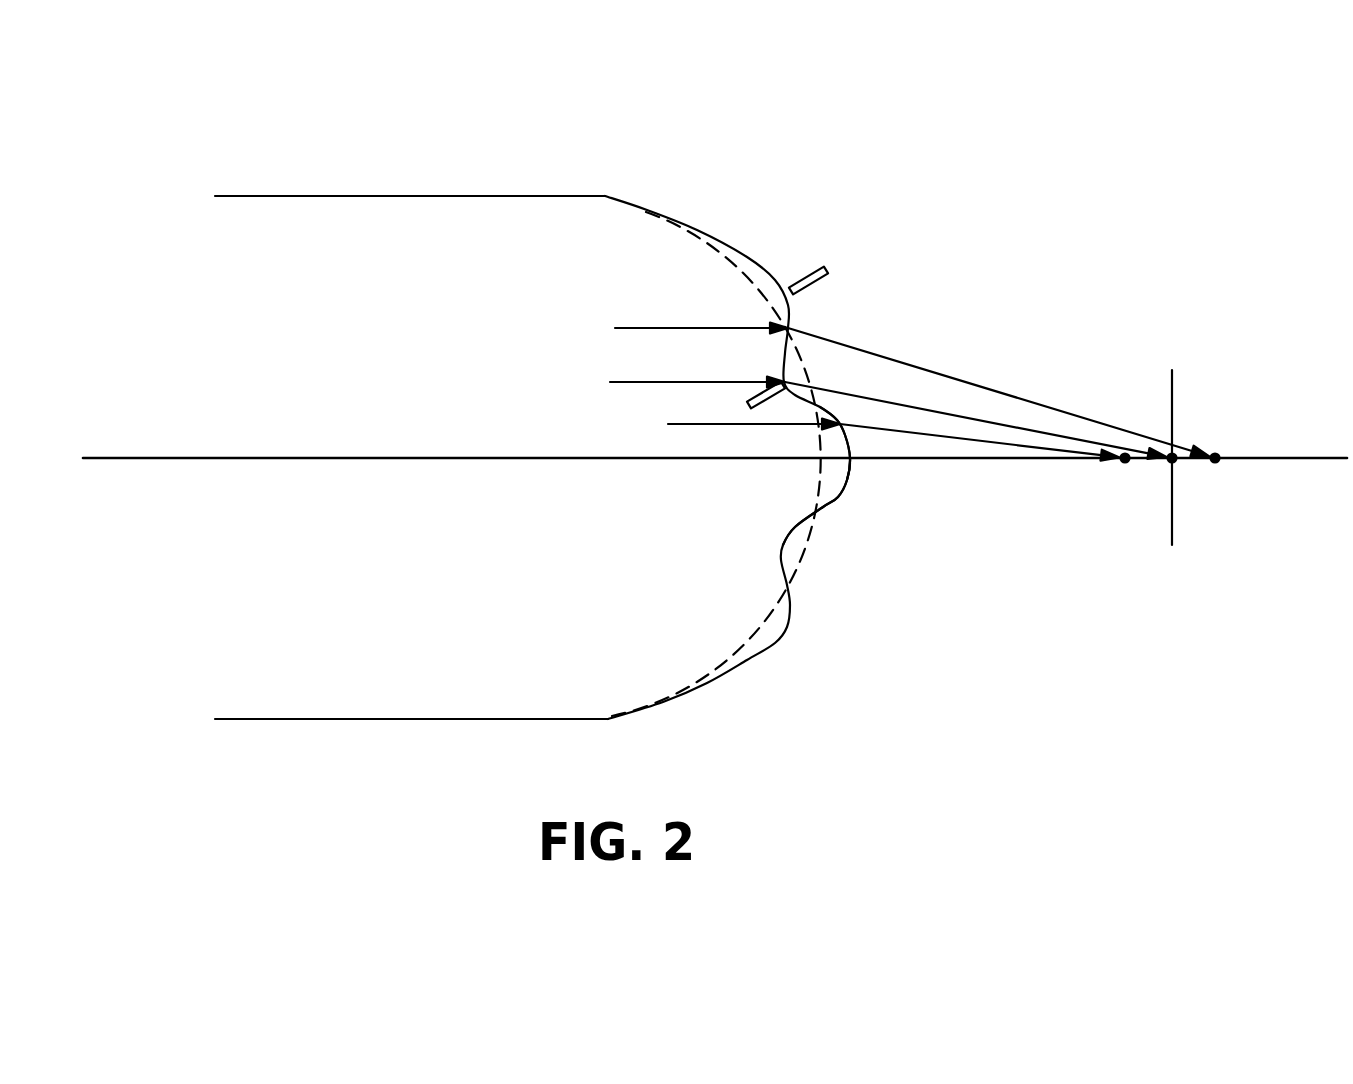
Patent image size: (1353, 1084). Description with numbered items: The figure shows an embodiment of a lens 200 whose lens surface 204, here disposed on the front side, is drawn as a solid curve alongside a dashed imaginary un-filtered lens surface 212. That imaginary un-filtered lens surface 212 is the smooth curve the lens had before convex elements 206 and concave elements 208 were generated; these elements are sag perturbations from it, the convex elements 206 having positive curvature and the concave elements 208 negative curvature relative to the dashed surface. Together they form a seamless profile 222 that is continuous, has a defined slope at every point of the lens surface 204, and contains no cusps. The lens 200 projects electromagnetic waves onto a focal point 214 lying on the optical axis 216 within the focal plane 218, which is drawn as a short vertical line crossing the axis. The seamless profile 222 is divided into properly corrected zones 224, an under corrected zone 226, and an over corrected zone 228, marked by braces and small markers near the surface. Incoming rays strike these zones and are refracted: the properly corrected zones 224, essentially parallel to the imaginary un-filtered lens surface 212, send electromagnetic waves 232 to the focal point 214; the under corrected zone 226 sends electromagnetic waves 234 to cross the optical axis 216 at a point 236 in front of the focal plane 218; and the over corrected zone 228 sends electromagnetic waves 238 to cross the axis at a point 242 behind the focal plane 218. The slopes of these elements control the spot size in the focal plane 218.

The lens 200 is at (414, 196).
The lens surface 204 is at (697, 697).
The convex elements 206 is at (787, 627).
The concave elements 208 is at (783, 535).
The imaginary un-filtered lens surface 212 is at (757, 633).
The focal point 214 is at (1180, 459).
The optical axis 216 is at (410, 458).
The focal plane 218 is at (1168, 523).
The seamless profile 222 is at (850, 478).
The properly corrected zones 224 is at (827, 268).
The under corrected zones 226 is at (850, 458).
The over corrected zones 228 is at (775, 372).
The electromagnetic waves 232 is at (1003, 425).
The electromagnetic waves 234 is at (947, 437).
The point 236 is at (1122, 463).
The electromagnetic waves 238 is at (1092, 419).
The point 242 is at (1217, 453).